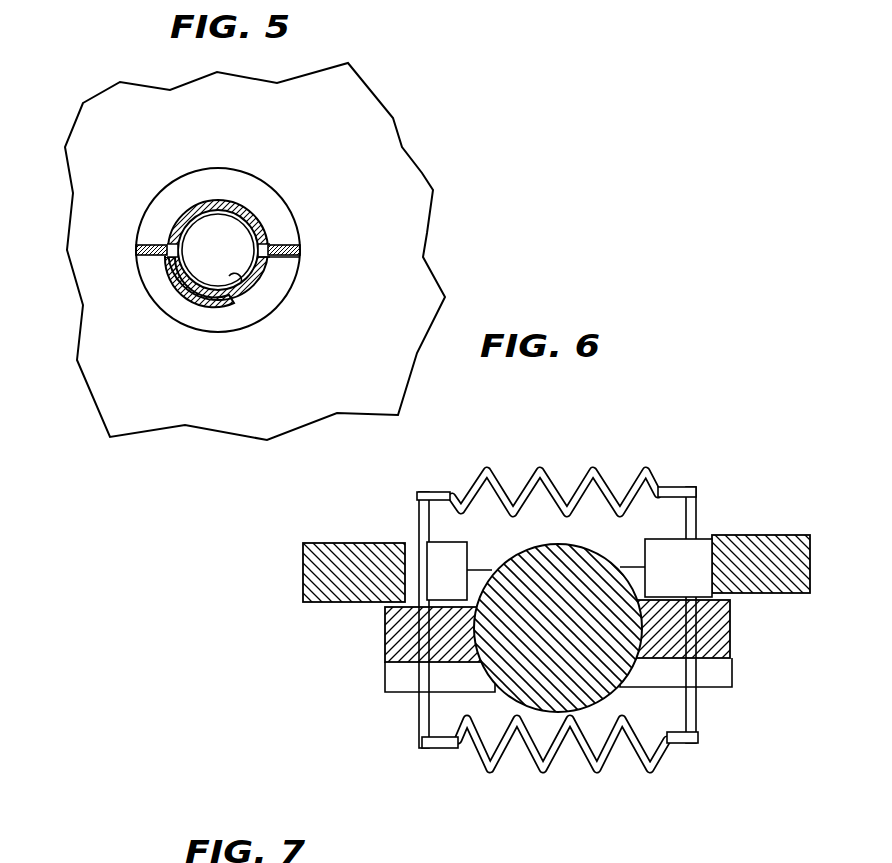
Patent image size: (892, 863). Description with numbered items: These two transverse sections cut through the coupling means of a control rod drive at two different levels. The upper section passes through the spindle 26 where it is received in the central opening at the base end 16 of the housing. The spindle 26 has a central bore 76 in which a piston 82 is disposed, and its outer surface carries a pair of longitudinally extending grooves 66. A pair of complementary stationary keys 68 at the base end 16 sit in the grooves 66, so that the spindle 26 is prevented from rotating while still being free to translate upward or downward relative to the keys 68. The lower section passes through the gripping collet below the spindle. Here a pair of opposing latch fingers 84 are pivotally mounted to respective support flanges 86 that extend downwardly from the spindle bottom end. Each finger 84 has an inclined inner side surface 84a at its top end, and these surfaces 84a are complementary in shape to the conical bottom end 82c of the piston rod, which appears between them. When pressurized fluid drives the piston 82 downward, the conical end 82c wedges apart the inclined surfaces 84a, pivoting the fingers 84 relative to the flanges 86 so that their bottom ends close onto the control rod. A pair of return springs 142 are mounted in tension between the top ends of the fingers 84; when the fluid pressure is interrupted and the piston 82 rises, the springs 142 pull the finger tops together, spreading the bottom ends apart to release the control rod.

In FIG. 5, the base end 16 is at (397, 220).
In FIG. 5, the spindle 26 is at (204, 188).
In FIG. 5, the piston 82 is at (223, 227).
In FIG. 5, the longitudinally extending grooves 66 is at (266, 247).
In FIG. 5, the stationary keys 68 is at (267, 253).
In FIG. 5, the central bore 76 is at (232, 290).
In FIG. 6, the return springs 142 is at (595, 470).
In FIG. 6, the support flanges 86 is at (362, 543).
In FIG. 6, the latch fingers 84 is at (385, 652).
In FIG. 6, the inclined inner side surface 84a is at (492, 673).
In FIG. 6, the conical bottom end 82c is at (607, 692).